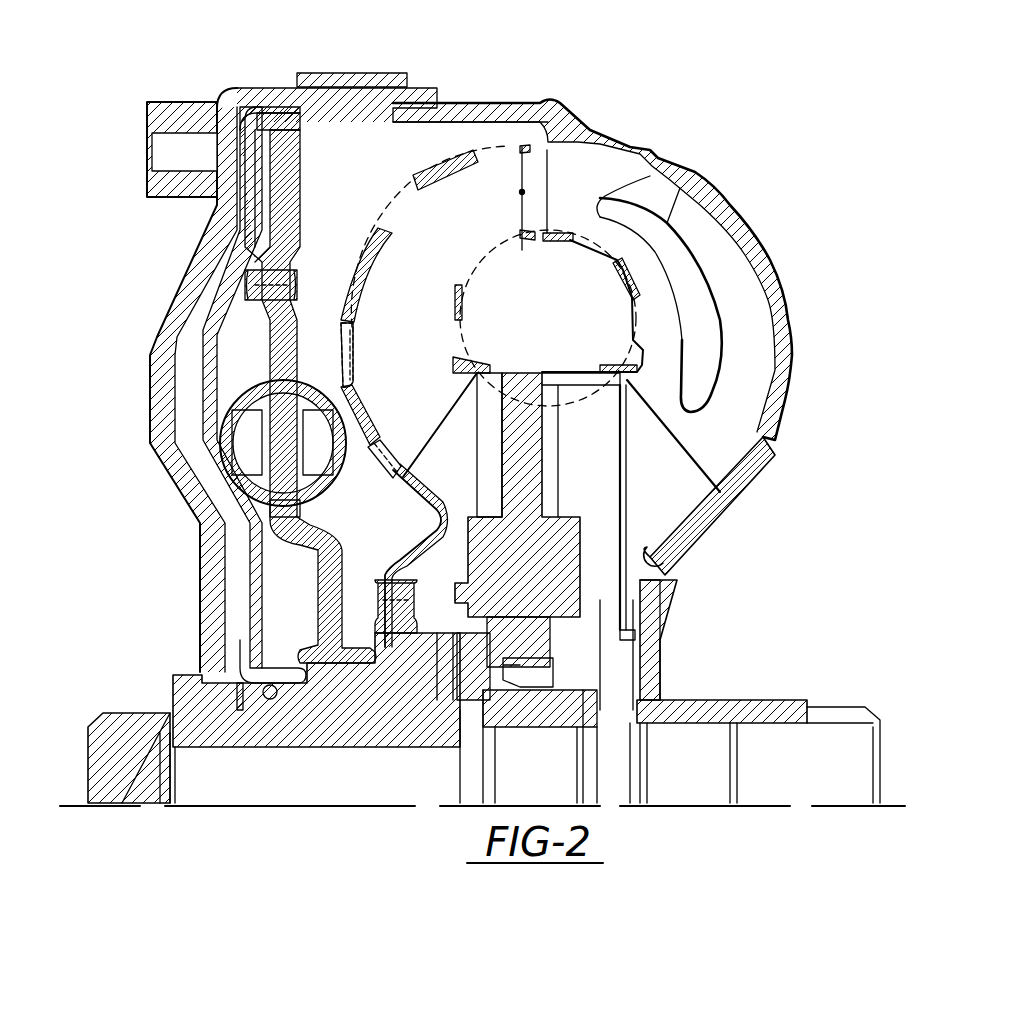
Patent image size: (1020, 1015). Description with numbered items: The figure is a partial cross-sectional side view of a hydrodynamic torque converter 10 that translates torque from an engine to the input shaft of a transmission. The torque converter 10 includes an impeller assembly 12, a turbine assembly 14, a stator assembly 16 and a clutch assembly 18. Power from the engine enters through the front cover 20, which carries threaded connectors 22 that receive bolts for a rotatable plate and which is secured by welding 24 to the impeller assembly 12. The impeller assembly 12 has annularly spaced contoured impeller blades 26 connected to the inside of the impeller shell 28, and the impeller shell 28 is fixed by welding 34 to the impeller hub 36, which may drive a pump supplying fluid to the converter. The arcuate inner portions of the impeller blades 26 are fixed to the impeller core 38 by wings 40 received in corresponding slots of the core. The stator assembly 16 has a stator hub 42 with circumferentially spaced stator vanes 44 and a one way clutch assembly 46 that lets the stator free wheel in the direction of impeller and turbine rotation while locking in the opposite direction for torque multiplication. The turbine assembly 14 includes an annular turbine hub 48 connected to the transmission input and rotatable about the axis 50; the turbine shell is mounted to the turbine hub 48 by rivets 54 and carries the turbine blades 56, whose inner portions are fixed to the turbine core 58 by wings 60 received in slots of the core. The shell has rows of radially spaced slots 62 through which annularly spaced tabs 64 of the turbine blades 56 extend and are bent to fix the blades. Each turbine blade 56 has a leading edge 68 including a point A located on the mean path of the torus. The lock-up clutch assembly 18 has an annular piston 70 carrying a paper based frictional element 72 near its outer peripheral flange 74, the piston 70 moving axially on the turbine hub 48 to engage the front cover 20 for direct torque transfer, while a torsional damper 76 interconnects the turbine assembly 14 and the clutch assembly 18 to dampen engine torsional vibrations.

The hydrodynamic torque converter 10 is at (780, 213).
The impeller assembly 12 is at (797, 337).
The turbine assembly 14 is at (417, 170).
The stator assembly 16 is at (653, 547).
The clutch assembly 18 is at (260, 213).
The front cover 20 is at (190, 277).
The threaded connectors 22 is at (162, 100).
The welding 24 is at (472, 103).
The impeller blades 26 is at (665, 235).
The impeller shell 28 is at (753, 247).
The welding 34 is at (650, 557).
The impeller hub 36 is at (753, 700).
The impeller core 38 is at (617, 308).
The wings 40 is at (612, 195).
The stator hub 42 is at (623, 540).
The stator vanes 44 is at (627, 457).
The one way clutch assembly 46 is at (560, 663).
The turbine hub 48 is at (380, 740).
The axis 50 is at (80, 807).
The rivets 54 is at (420, 582).
The turbine blades 56 is at (522, 250).
The turbine core 58 is at (457, 300).
The wings 60 is at (460, 340).
The slots 62 is at (350, 325).
The tabs 64 is at (400, 215).
The leading edge 68 is at (522, 192).
The annular piston 70 is at (243, 125).
The frictional element 72 is at (247, 157).
The outer peripheral flange 74 is at (273, 113).
The torsional damper 76 is at (303, 327).
The point A is at (548, 175).